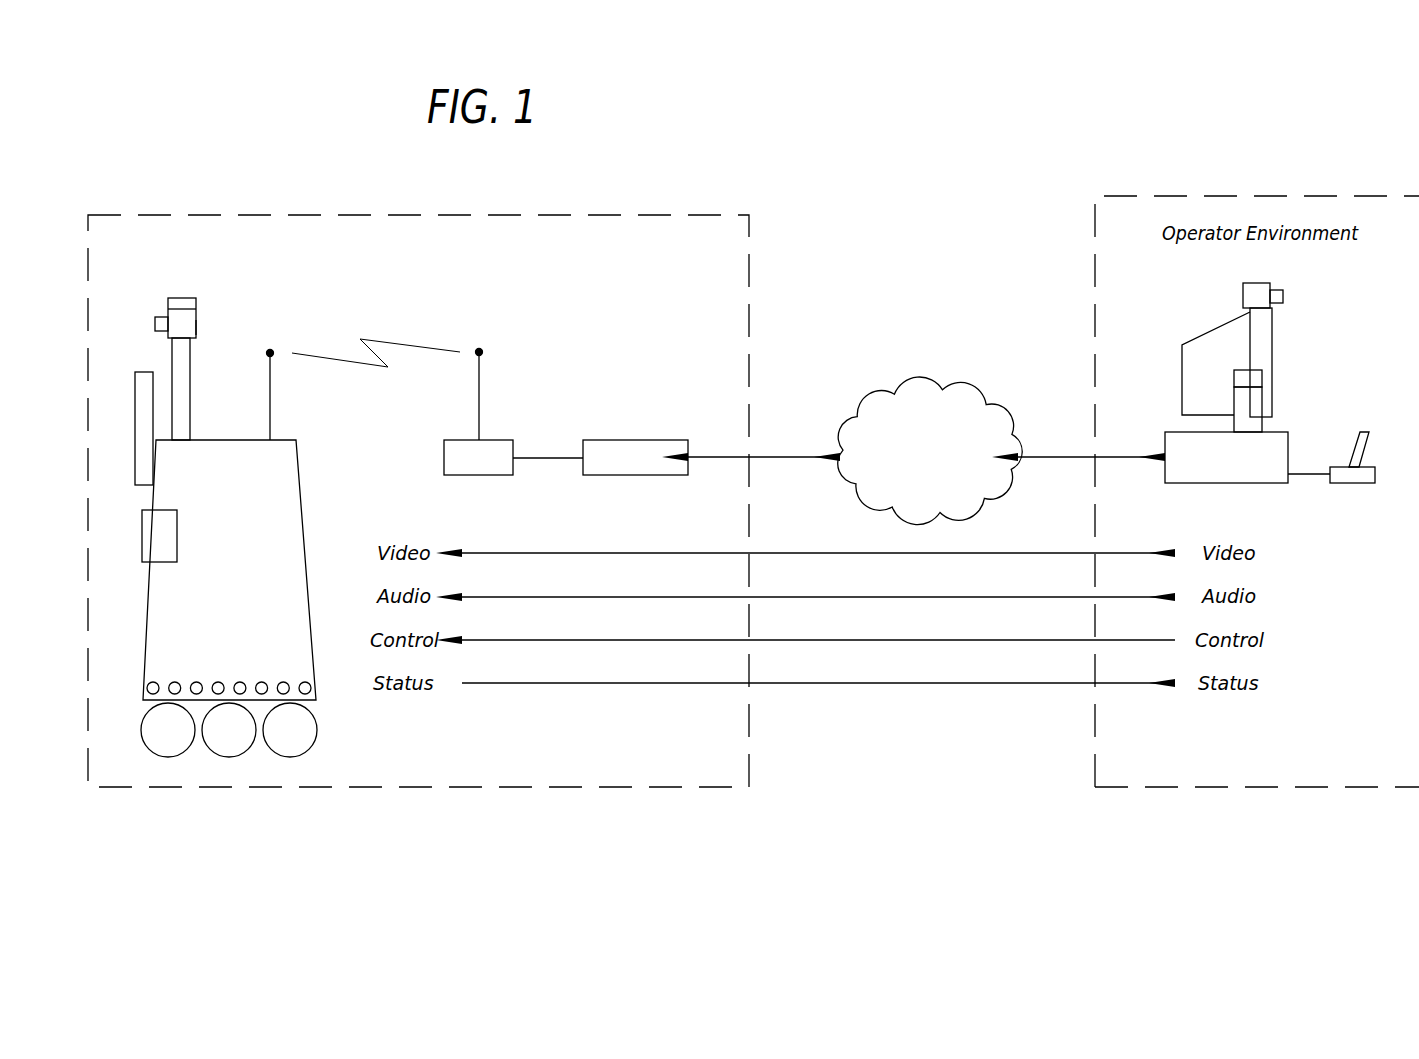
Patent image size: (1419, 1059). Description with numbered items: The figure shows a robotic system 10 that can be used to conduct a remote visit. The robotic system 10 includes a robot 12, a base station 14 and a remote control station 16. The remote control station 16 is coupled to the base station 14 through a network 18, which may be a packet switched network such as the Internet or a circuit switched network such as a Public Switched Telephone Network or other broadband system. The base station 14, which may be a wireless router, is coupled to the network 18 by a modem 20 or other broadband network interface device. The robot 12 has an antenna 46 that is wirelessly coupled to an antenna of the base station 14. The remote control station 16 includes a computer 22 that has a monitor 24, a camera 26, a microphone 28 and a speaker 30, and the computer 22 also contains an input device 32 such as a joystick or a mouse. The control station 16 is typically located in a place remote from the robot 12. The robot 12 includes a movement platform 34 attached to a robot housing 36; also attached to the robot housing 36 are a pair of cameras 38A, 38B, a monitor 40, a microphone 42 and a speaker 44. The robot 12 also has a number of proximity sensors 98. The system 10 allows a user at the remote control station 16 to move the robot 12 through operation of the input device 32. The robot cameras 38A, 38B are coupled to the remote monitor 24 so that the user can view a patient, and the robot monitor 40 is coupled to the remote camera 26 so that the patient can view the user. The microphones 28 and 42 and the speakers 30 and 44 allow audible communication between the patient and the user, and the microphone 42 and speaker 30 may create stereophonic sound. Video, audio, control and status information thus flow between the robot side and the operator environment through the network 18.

The robotic system 10 is at (753, 491).
The robot 12 is at (244, 509).
The base station 14 is at (495, 440).
The remote control station 16 is at (1190, 387).
The network 18 is at (930, 451).
The modem 20 is at (635, 440).
The computer 22 is at (1260, 475).
The monitor 24 is at (1263, 338).
The camera 26 is at (1250, 295).
The microphone 28 is at (1243, 375).
The speaker 30 is at (1257, 423).
The input device 32 is at (1363, 475).
The movement platform 34 is at (295, 737).
The robot housing 36 is at (183, 660).
The camera 38A is at (155, 325).
The camera 38B is at (190, 328).
The monitor 40 is at (145, 415).
The microphone 42 is at (182, 305).
The speaker 44 is at (152, 540).
The antenna 46 is at (270, 353).
The proximity sensors 98 is at (148, 683).